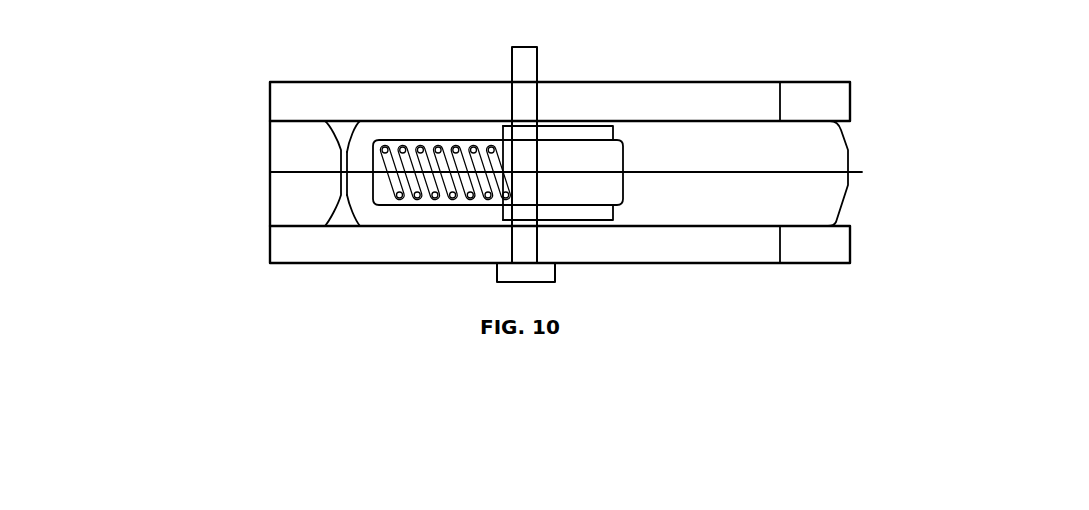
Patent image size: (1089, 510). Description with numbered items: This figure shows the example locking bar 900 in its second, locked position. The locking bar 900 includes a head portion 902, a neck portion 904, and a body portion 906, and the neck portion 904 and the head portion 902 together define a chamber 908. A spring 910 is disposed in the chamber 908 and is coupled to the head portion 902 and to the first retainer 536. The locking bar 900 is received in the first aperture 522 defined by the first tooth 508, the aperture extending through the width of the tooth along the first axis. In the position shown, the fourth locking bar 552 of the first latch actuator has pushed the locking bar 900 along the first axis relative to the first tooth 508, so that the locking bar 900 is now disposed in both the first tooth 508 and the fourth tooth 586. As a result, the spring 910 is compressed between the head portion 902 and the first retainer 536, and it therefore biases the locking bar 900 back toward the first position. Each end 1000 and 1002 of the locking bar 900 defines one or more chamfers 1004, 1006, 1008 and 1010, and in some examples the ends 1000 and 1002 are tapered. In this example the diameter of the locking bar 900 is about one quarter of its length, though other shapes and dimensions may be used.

The first tooth 508 is at (295, 250).
The first aperture 522 is at (249, 145).
The first retainer 536 is at (527, 62).
The fourth locking bar 552 is at (285, 157).
The fourth tooth 586 is at (813, 102).
The locking bar 900 is at (820, 138).
The head portion 902 is at (388, 128).
The neck portion 904 is at (550, 140).
The body portion 906 is at (673, 155).
The chamber 908 is at (583, 173).
The spring 910 is at (432, 150).
The end of the locking bar 1000 is at (342, 177).
The end of the locking bar 1002 is at (862, 172).
The chamfer 1004 is at (348, 145).
The chamfer 1006 is at (338, 205).
The chamfer 1008 is at (843, 133).
The chamfer 1010 is at (847, 204).